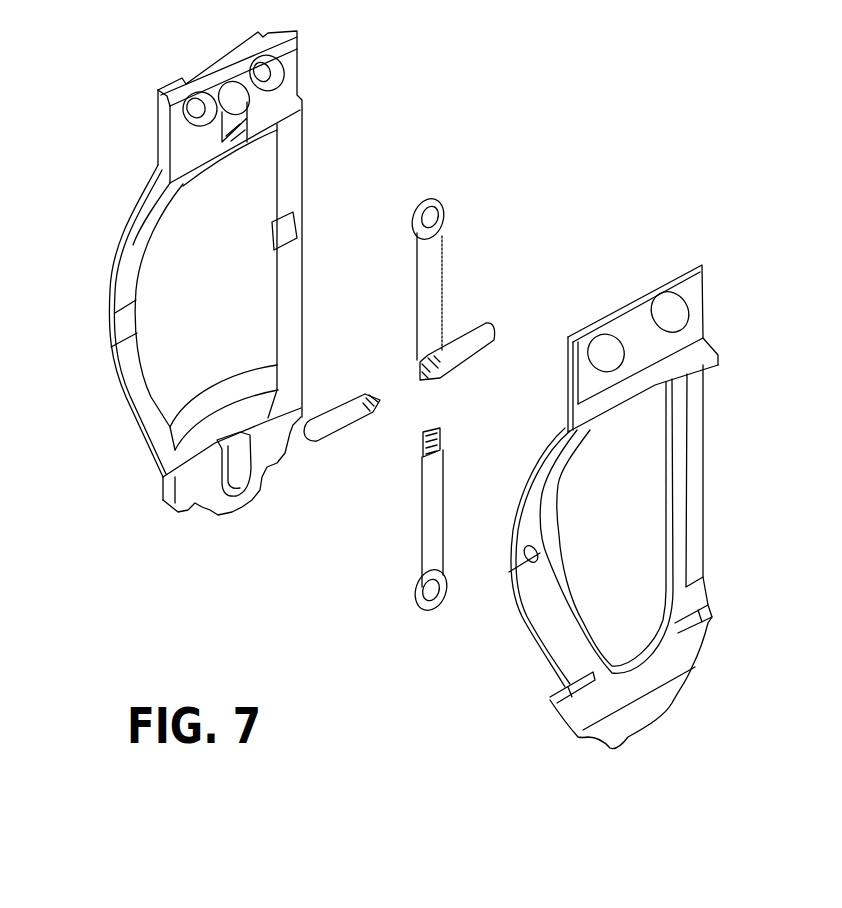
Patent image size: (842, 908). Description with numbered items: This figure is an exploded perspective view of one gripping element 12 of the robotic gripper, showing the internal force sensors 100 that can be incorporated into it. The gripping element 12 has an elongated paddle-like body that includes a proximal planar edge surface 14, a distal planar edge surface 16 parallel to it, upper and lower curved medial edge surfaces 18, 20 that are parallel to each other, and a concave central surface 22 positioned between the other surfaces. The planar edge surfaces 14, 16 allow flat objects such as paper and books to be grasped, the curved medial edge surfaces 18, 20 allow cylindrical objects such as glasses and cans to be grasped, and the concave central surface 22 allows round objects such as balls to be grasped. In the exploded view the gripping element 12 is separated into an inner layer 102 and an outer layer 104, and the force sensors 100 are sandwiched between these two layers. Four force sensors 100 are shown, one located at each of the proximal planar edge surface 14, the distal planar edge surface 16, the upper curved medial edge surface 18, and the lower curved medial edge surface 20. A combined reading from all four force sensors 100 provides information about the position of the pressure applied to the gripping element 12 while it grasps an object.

The gripping element 12 is at (572, 150).
The proximal planar edge surface 14 is at (637, 310).
The distal planar edge surface 16 is at (637, 721).
The upper curved medial edge surface 18 is at (545, 645).
The lower curved medial edge surface 20 is at (693, 503).
The concave central surface 22 is at (629, 547).
The force sensor 100 is at (433, 213).
The inner layer 102 is at (756, 430).
The outer layer 104 is at (106, 187).